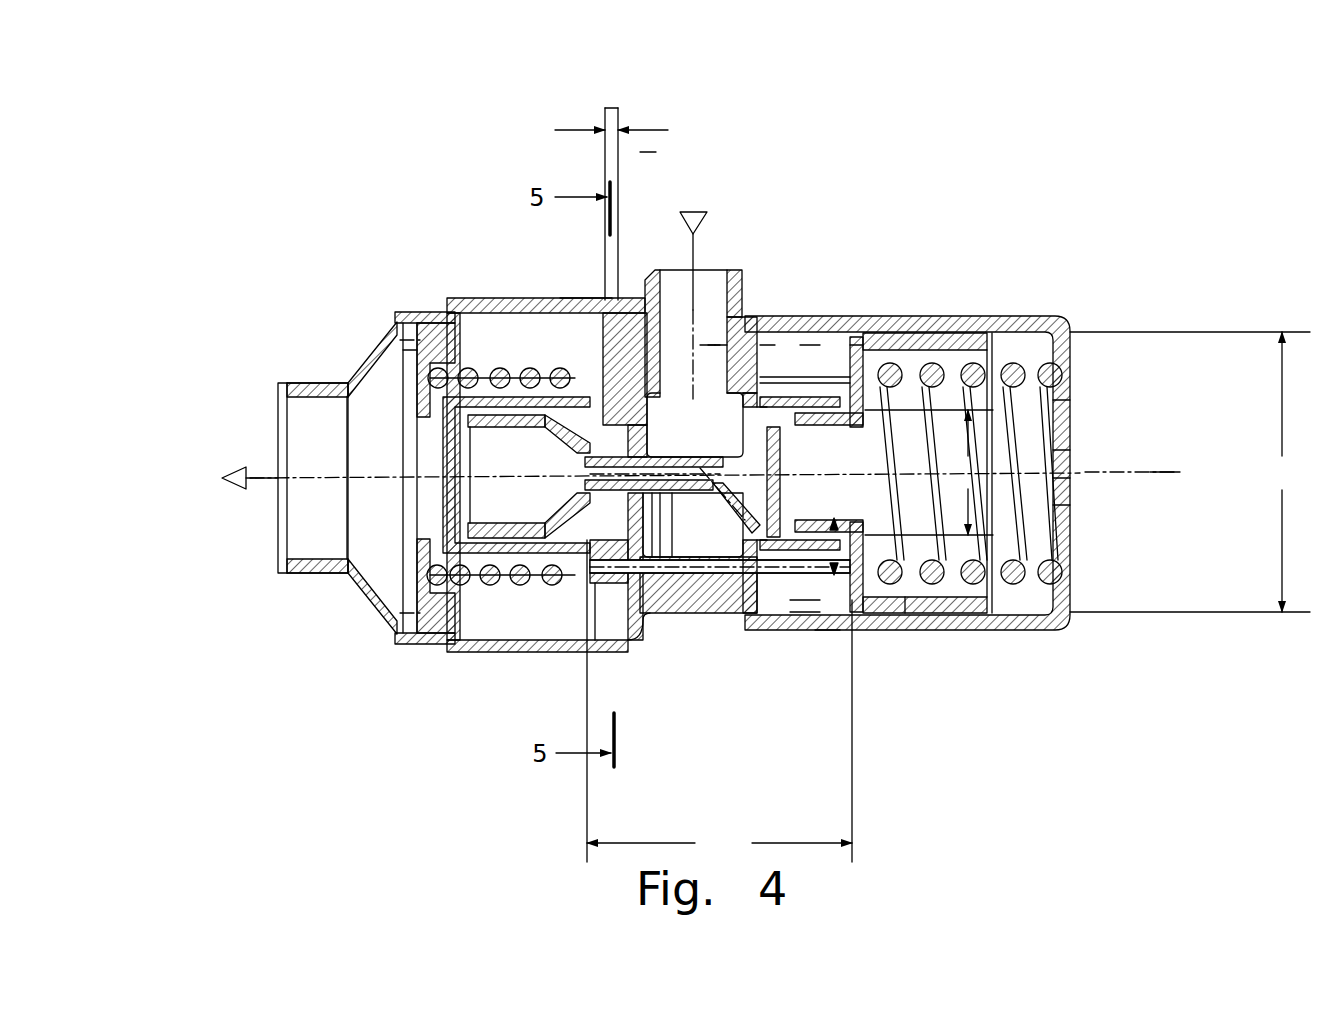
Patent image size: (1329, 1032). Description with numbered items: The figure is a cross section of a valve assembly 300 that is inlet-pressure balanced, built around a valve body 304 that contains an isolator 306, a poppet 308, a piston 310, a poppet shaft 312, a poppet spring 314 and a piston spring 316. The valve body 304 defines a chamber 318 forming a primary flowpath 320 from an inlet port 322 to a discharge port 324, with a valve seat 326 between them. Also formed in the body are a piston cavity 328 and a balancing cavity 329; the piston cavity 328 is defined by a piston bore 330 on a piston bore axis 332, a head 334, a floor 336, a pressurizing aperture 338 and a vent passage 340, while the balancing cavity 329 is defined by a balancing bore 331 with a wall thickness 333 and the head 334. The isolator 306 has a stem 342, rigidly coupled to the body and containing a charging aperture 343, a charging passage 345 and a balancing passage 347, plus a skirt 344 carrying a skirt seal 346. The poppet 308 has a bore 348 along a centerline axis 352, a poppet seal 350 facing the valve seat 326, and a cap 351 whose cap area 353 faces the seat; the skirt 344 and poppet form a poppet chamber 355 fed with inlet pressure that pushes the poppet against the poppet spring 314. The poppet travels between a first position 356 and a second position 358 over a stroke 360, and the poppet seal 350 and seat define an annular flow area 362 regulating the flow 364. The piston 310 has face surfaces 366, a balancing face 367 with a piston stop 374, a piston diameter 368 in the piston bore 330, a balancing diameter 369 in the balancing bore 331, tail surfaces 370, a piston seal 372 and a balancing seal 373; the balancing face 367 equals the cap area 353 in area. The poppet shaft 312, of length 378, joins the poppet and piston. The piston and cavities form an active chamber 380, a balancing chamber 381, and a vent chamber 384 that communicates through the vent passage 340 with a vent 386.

The valve assembly 300 is at (342, 768).
The valve body 304 is at (1112, 200).
The isolator 306 is at (647, 615).
The poppet 308 is at (484, 652).
The piston 310 is at (870, 335).
The poppet shaft 312 is at (515, 298).
The poppet spring 314 is at (452, 345).
The piston spring 316 is at (1070, 527).
The chamber 318 is at (722, 345).
The primary flowpath 320 is at (673, 345).
The inlet port 322 is at (713, 345).
The discharge port 324 is at (277, 527).
The valve seat 326 is at (585, 298).
The piston cavity 328 is at (1040, 322).
The balancing cavity 329 is at (766, 345).
The piston bore 330 is at (826, 630).
The balancing bore 331 is at (735, 615).
The piston bore axis 332 is at (1180, 470).
The wall thickness 333 is at (822, 520).
The head 334 is at (708, 345).
The floor 336 is at (1068, 405).
The pressurizing aperture 338 is at (660, 615).
The vent passage 340 is at (1065, 445).
The stem 342 is at (675, 615).
The charging aperture 343 is at (705, 615).
The skirt 344 is at (372, 585).
The charging passage 345 is at (695, 615).
The skirt seal 346 is at (546, 650).
The balancing passage 347 is at (772, 470).
The bore 348 is at (397, 612).
The poppet seal 350 is at (595, 628).
The cap 351 is at (372, 540).
The centerline axis 352 is at (392, 395).
The cap area 353 is at (448, 368).
The poppet chamber 355 is at (405, 350).
The first position 356 is at (600, 145).
The second position 358 is at (655, 152).
The stroke 360 is at (612, 108).
The annular flow area 362 is at (612, 425).
The flow 364 is at (237, 489).
The face surfaces 366 is at (805, 612).
The balancing face 367 is at (760, 500).
The piston diameter 368 is at (1190, 472).
The balancing diameter 369 is at (967, 472).
The tail surfaces 370 is at (840, 462).
The piston seal 372 is at (855, 615).
The balancing seal 373 is at (805, 600).
The piston stop 374 is at (855, 443).
The length 378 is at (719, 701).
The active chamber 380 is at (857, 345).
The balancing chamber 381 is at (722, 615).
The vent chamber 384 is at (915, 612).
The vent 386 is at (1075, 479).